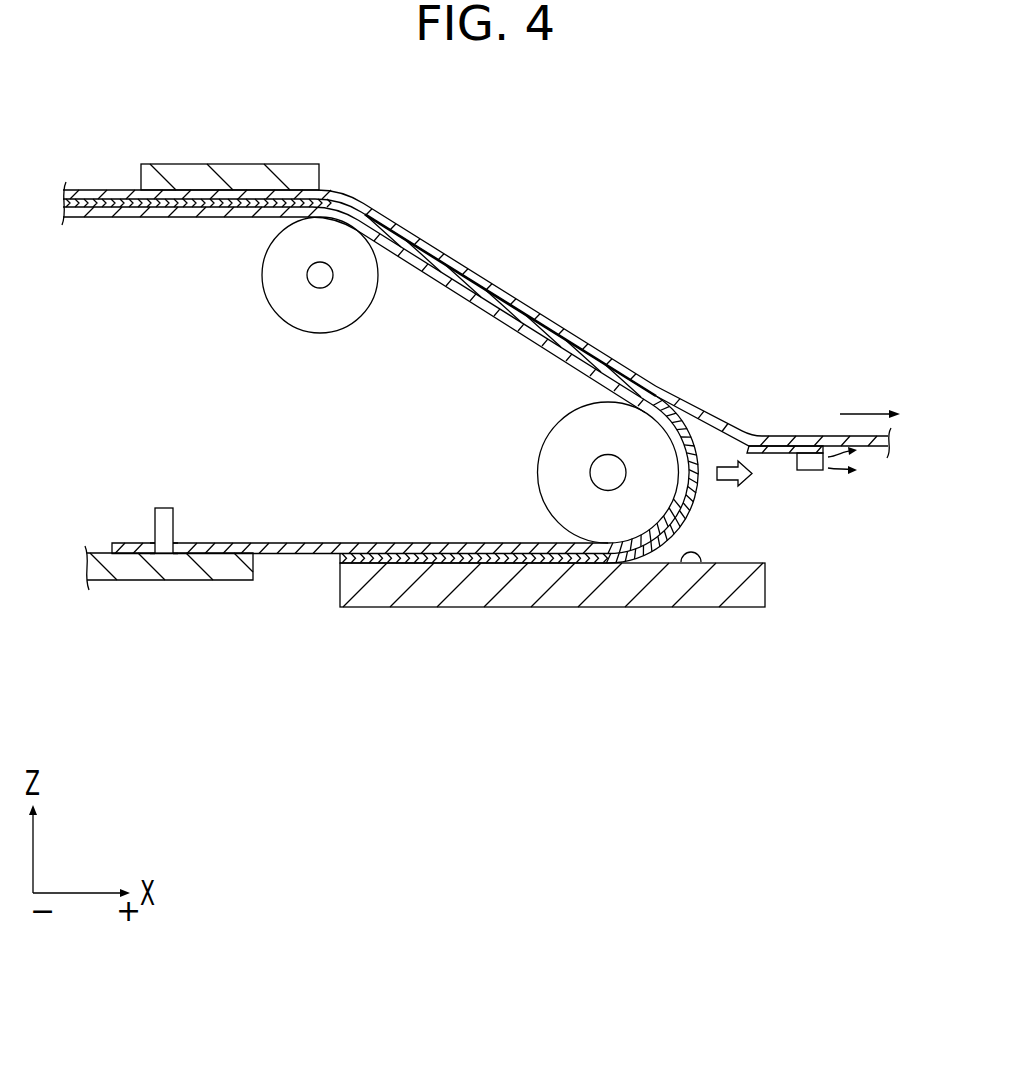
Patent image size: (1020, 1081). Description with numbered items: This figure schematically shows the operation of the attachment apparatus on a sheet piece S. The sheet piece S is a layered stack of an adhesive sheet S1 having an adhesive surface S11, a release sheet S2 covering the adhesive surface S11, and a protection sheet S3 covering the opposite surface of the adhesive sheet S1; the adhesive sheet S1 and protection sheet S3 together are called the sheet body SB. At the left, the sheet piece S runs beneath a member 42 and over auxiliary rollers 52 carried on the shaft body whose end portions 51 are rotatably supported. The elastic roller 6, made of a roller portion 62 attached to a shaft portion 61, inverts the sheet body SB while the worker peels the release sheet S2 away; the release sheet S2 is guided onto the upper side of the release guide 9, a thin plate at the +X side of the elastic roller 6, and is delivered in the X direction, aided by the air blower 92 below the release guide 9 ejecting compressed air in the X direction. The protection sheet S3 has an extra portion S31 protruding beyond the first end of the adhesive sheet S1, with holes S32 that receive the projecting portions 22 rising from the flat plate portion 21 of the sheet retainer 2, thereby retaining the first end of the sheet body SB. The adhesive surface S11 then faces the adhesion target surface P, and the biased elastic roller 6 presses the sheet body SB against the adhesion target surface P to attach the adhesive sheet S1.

The sheet piece S is at (81, 166).
The pressing member 42 is at (162, 164).
The end portions 51 is at (307, 275).
The auxiliary rollers 52 is at (296, 308).
The elastic roller 6 is at (570, 448).
The roller portion 62 is at (538, 471).
The shaft portion 61 is at (592, 483).
The sheet retainer 2 is at (148, 519).
The projecting portions 22 is at (162, 507).
The flat plate portion 21 is at (122, 572).
The sheet body SB is at (441, 516).
The protection sheet S3 is at (400, 520).
The adhesive sheet S1 is at (543, 479).
The holes S32 is at (170, 548).
The extra portion S31 is at (290, 554).
The adhesive surface S11 is at (688, 517).
The release sheet S2 is at (710, 412).
The adhesion target surface P is at (690, 572).
The release guide 9 is at (782, 455).
The air blower 92 is at (812, 472).